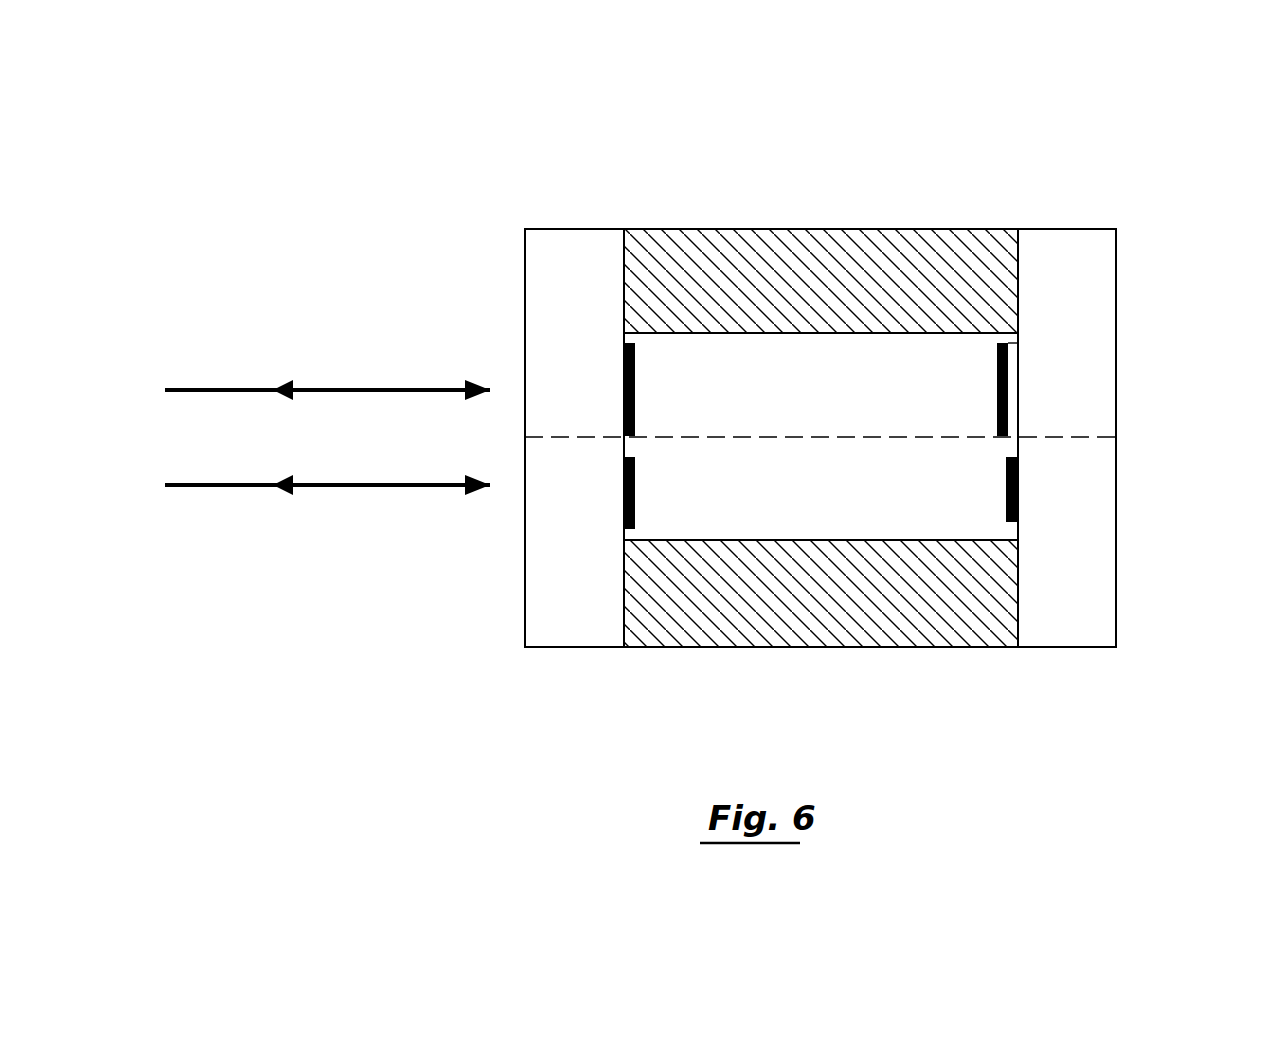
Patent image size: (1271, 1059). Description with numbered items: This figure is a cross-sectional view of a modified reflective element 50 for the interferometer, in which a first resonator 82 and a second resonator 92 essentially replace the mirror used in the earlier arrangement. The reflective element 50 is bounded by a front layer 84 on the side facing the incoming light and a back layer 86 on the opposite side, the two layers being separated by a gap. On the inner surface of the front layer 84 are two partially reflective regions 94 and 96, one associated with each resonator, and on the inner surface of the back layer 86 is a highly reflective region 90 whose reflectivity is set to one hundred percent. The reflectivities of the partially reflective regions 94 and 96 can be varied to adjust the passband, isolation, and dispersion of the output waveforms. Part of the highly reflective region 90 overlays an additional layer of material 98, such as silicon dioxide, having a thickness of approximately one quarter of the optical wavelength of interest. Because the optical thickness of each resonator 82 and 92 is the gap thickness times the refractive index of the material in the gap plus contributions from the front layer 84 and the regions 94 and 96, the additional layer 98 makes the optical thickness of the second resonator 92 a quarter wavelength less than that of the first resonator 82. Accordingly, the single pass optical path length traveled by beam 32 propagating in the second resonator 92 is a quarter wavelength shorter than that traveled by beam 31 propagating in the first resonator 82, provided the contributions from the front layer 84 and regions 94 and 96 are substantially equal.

The reflective element 50 is at (847, 198).
The second resonator 92 is at (727, 293).
The front layer 84 is at (583, 595).
The back layer 86 is at (1069, 592).
The partially reflective region 94 is at (624, 390).
The partially reflective region 96 is at (624, 486).
The additional layer of material 98 is at (1019, 410).
The highly reflective region 90 is at (1006, 488).
The first resonator 82 is at (1117, 512).
The beam 32 is at (222, 388).
The beam 31 is at (237, 488).